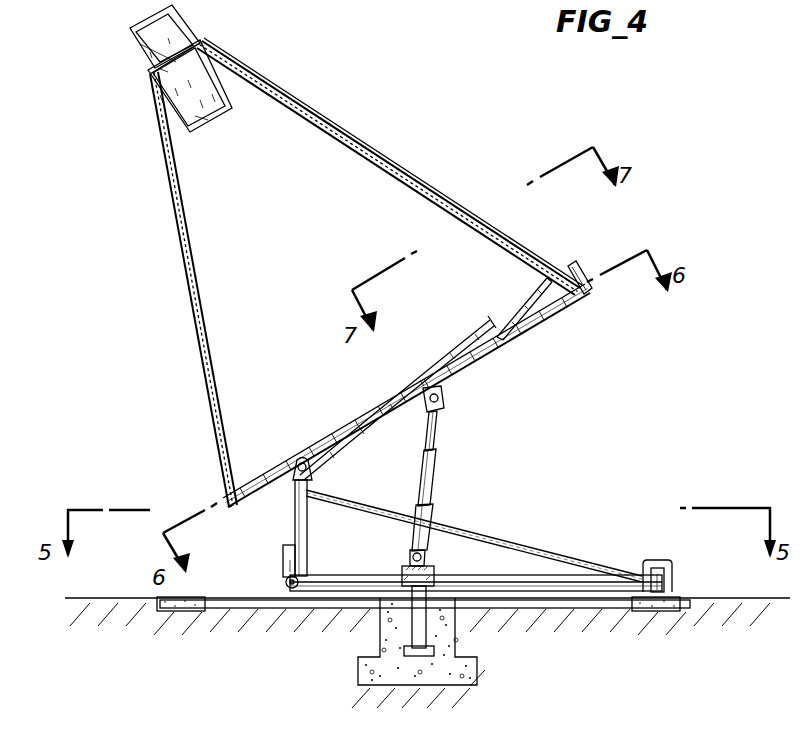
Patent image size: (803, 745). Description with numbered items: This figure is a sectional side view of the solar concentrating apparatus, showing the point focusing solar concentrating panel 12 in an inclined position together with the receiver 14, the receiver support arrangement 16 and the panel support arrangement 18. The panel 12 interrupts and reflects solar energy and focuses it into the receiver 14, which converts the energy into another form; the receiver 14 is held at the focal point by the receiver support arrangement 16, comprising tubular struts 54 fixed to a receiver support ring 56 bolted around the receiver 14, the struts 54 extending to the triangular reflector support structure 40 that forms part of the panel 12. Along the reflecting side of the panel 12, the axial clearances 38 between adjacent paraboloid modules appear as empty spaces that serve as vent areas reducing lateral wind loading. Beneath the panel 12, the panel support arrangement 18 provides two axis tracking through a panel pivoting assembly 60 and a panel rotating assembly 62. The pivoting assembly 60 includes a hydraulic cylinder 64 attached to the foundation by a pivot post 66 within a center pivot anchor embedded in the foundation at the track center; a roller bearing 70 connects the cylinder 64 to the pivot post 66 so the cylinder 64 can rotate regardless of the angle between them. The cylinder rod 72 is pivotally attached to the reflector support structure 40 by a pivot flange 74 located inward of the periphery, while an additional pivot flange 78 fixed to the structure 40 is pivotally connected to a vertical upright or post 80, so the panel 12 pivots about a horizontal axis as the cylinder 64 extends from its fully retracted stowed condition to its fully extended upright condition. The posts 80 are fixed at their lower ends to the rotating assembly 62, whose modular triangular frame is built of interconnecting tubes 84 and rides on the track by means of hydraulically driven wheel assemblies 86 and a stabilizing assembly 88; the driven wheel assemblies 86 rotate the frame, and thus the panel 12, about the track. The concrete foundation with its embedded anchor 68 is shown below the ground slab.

The point focusing solar concentrating panel 12 is at (325, 420).
The receiver 14 is at (205, 122).
The receiver support arrangement 16 is at (352, 136).
The panel support arrangement 18 is at (552, 454).
The axial clearances 38 is at (490, 320).
The reflector support structure 40 is at (525, 337).
The tubular struts 54 is at (196, 320).
The receiver support ring 56 is at (155, 80).
The panel pivoting assembly 60 is at (455, 481).
The panel rotating assembly 62 is at (528, 546).
The hydraulic cylinder 64 is at (440, 514).
The pivot post 66 is at (390, 626).
The concrete foundation 68 is at (462, 650).
The roller bearing 70 is at (440, 572).
The cylinder rod 72 is at (440, 432).
The pivot flange 74 is at (446, 400).
The pivot flange 78 is at (312, 472).
The uprights or posts 80 is at (295, 508).
The interconnecting tubes 84 is at (362, 578).
The hydraulically driven wheel assemblies 86 is at (283, 566).
The stabilizing assembly 88 is at (664, 560).